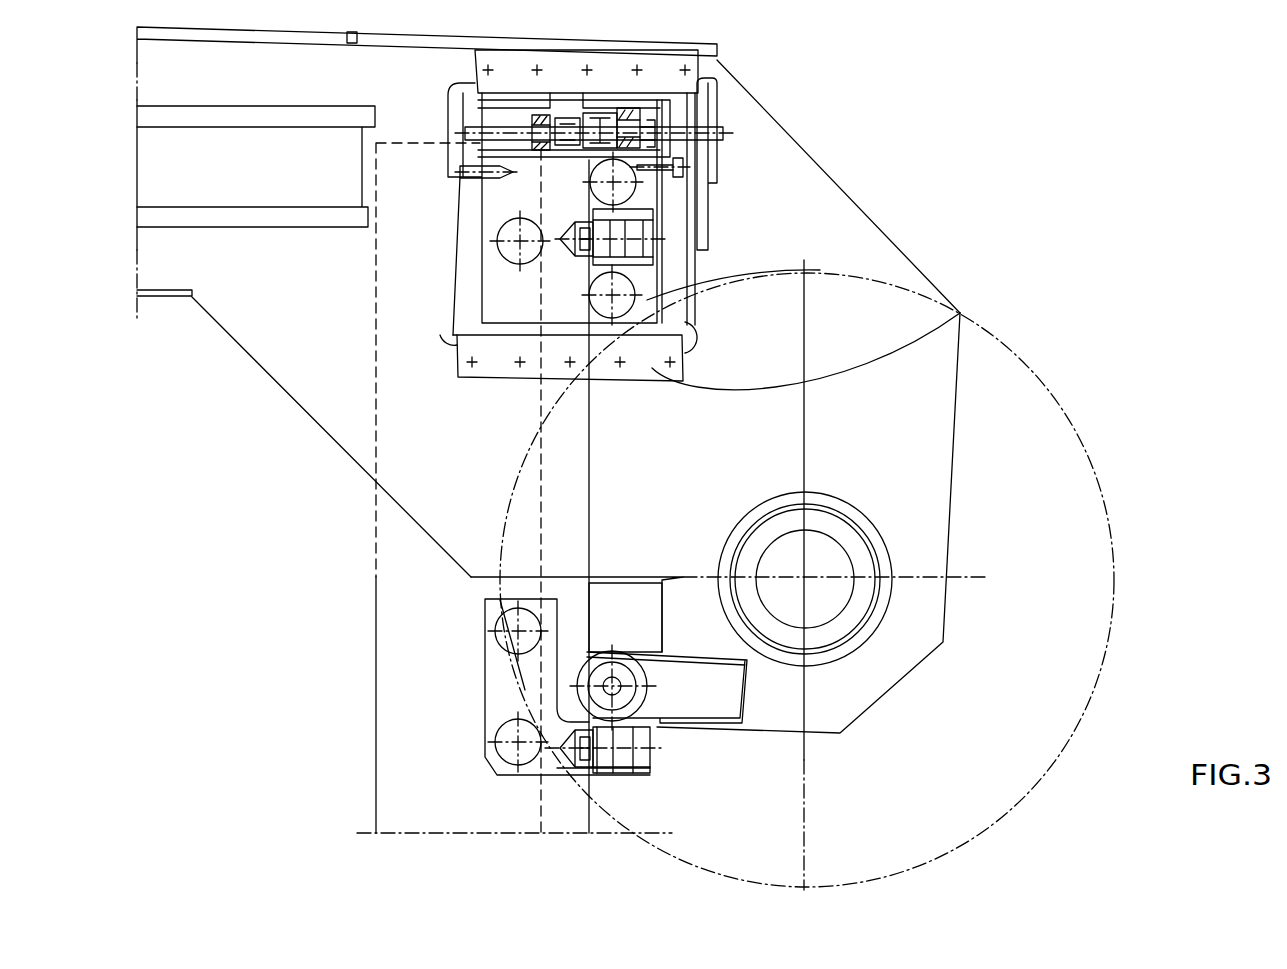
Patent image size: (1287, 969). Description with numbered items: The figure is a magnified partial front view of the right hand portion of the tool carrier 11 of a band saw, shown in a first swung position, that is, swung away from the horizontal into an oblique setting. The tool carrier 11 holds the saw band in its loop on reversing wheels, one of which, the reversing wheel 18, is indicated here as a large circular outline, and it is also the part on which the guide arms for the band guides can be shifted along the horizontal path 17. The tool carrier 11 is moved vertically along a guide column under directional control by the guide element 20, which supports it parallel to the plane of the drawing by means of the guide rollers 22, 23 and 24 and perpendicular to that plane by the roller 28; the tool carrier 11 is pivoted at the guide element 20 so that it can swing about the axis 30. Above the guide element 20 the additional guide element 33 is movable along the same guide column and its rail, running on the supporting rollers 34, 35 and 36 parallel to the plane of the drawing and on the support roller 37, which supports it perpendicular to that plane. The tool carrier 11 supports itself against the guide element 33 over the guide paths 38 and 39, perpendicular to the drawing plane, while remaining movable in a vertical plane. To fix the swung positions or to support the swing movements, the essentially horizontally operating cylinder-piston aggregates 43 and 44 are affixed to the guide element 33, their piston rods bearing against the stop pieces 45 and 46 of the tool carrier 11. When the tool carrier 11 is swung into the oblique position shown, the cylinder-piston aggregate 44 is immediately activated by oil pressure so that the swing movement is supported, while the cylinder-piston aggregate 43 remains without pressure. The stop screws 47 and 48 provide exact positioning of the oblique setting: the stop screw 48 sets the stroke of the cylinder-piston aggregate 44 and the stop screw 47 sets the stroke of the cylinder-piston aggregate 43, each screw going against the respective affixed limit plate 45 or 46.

The tool carrier 11 is at (332, 382).
The path 17 is at (172, 178).
The reversing wheel 18 is at (1075, 455).
The guide element 20 is at (525, 690).
The guide roller 22 is at (493, 650).
The guide roller 23 is at (515, 735).
The guide roller 24 is at (600, 695).
The roller 28 is at (575, 773).
The axis 30 is at (595, 770).
The additional guide element 33 is at (497, 202).
The supporting roller 34 is at (513, 252).
The supporting roller 35 is at (637, 183).
The supporting roller 36 is at (663, 312).
The support roller 37 is at (577, 252).
The guide path 38 is at (685, 70).
The guide path 39 is at (965, 314).
The cylinder-piston aggregate 43 is at (507, 117).
The cylinder-piston aggregate 44 is at (610, 108).
The stop piece 45 is at (443, 180).
The stop piece 46 is at (657, 133).
The stop screw 47 is at (683, 157).
The stop screw 48 is at (490, 172).